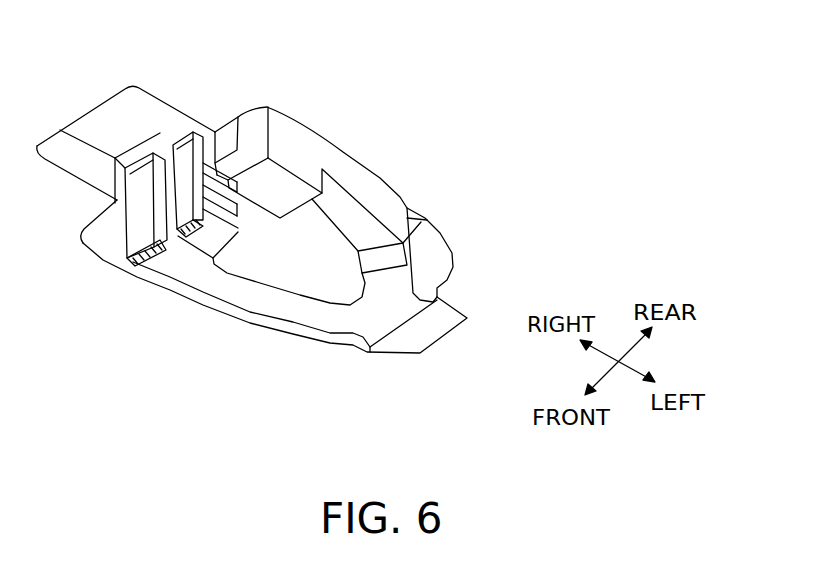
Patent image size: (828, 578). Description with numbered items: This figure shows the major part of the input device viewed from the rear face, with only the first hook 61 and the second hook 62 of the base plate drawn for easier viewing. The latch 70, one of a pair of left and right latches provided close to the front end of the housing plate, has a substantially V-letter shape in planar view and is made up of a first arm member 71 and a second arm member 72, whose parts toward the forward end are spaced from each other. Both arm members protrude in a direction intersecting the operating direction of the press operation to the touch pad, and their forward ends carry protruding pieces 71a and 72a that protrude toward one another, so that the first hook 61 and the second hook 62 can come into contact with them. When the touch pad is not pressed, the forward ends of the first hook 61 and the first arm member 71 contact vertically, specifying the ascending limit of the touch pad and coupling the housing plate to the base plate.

The latch 70 is at (252, 229).
The first arm member 71 is at (245, 165).
The protruding piece 71a is at (228, 172).
The second arm member 72 is at (274, 286).
The protruding piece 72a is at (232, 238).
The first hook 61 is at (184, 150).
The second hook 62 is at (147, 175).